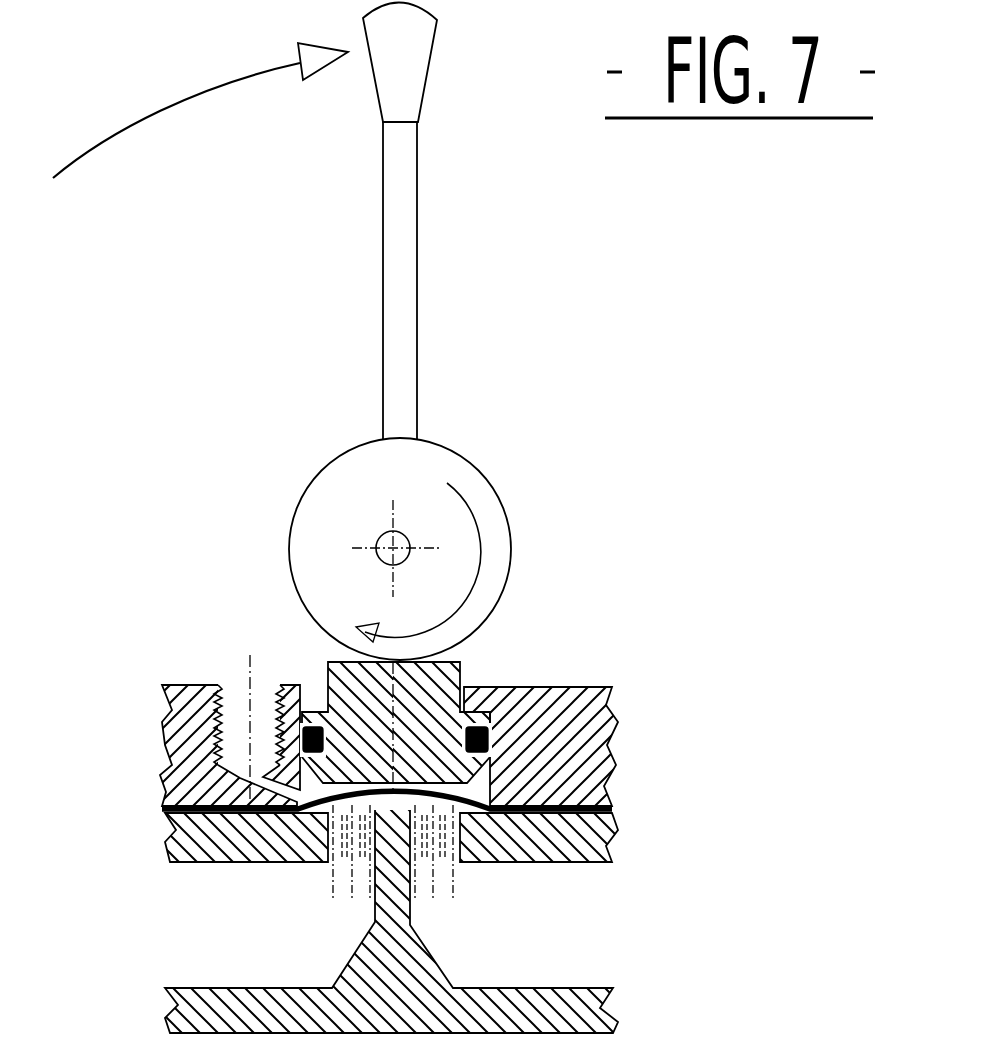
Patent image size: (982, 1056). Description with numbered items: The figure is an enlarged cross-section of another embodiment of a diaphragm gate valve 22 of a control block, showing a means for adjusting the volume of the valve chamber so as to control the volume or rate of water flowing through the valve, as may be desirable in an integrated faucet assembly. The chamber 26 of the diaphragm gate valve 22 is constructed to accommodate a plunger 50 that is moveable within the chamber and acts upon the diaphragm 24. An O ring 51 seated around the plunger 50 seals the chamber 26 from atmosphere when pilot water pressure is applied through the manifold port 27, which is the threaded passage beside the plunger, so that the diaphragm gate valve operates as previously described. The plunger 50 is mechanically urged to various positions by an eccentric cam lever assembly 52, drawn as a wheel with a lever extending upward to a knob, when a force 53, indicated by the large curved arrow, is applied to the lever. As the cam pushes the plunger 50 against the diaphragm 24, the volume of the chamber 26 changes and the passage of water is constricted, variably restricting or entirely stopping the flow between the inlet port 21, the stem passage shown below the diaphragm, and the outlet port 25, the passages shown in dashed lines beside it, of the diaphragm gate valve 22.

The inlet port 21 is at (445, 873).
The diaphragm gate valve 22 is at (300, 858).
The diaphragm 24 is at (165, 809).
The outlet port 25 is at (347, 868).
The chamber 26 is at (476, 796).
The manifold port 27 is at (262, 750).
The plunger 50 is at (462, 676).
The O ring 51 is at (493, 742).
The eccentric cam lever assembly 52 is at (417, 188).
The force 53 is at (185, 97).